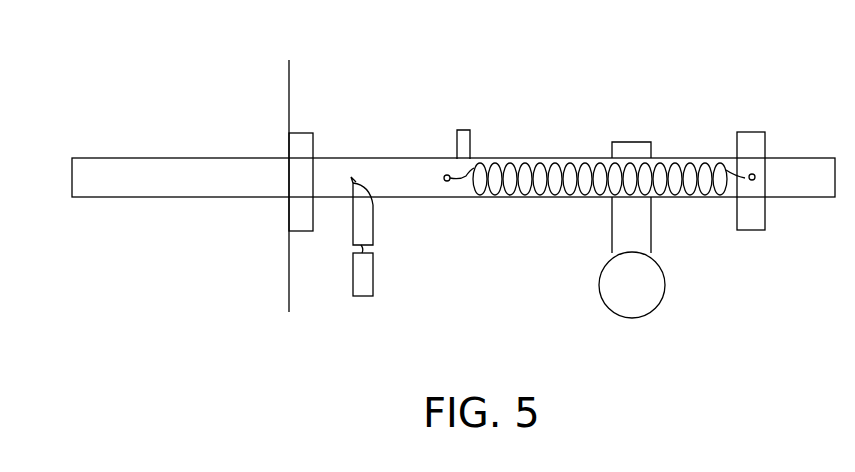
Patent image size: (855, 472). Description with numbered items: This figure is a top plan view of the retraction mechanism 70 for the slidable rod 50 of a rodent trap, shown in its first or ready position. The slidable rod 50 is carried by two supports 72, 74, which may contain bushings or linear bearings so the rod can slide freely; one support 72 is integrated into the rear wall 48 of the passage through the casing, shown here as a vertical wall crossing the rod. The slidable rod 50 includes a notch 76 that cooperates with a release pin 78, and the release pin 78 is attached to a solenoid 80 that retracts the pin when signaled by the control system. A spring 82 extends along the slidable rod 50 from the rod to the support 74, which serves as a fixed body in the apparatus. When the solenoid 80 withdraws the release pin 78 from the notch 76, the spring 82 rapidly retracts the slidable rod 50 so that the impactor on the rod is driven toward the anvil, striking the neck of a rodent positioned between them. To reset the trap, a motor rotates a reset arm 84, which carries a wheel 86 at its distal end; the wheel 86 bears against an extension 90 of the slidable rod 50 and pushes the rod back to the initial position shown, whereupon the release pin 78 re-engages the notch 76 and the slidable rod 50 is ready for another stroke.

The rear wall 48 is at (289, 93).
The slidable rod 50 is at (813, 197).
The retraction mechanism 70 is at (610, 80).
The support 72 is at (300, 133).
The support 74 is at (752, 132).
The notch 76 is at (357, 180).
The release pin 78 is at (373, 215).
The solenoid 80 is at (373, 275).
The spring 82 is at (553, 198).
The reset arm 84 is at (651, 226).
The wheel 86 is at (665, 285).
The extension 90 is at (463, 127).